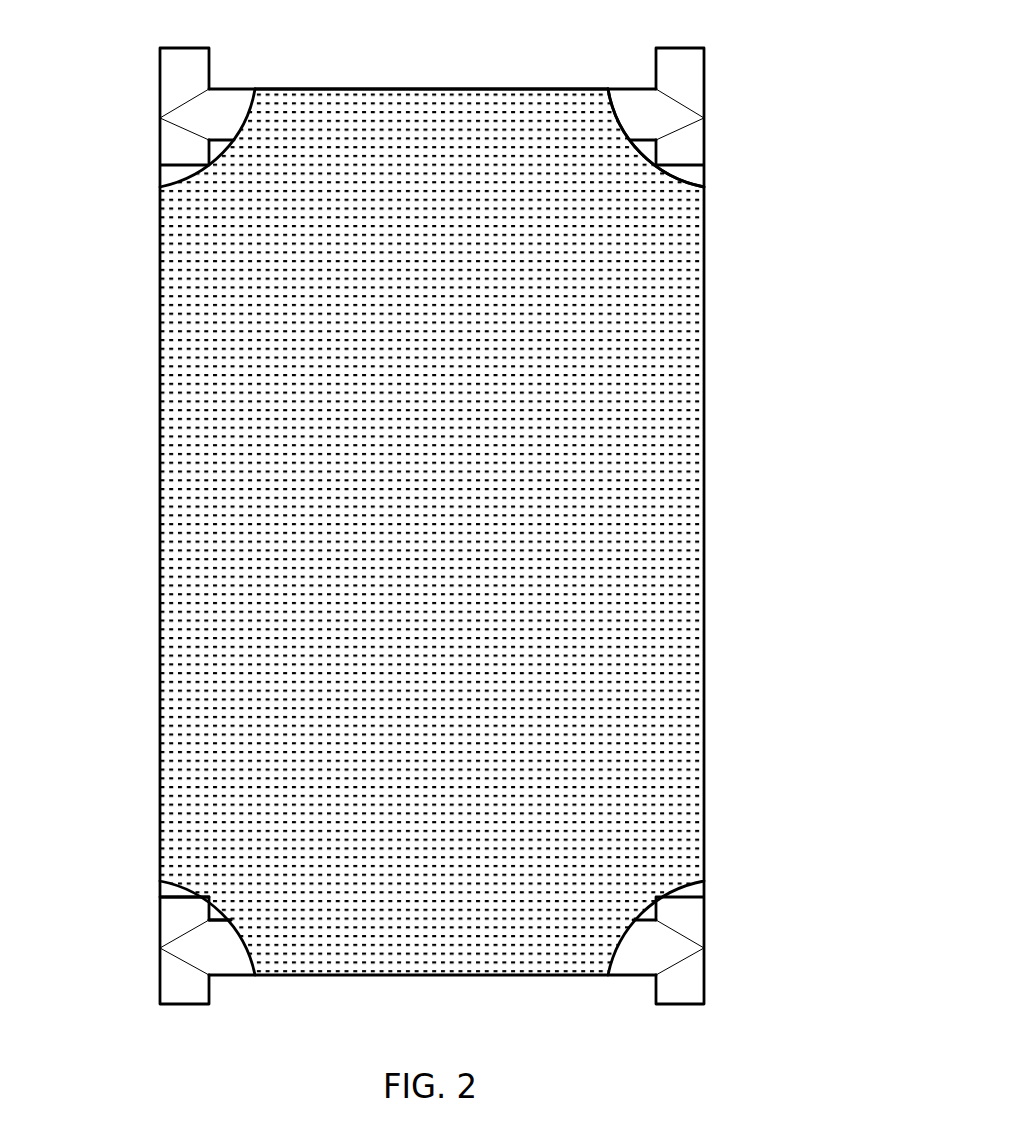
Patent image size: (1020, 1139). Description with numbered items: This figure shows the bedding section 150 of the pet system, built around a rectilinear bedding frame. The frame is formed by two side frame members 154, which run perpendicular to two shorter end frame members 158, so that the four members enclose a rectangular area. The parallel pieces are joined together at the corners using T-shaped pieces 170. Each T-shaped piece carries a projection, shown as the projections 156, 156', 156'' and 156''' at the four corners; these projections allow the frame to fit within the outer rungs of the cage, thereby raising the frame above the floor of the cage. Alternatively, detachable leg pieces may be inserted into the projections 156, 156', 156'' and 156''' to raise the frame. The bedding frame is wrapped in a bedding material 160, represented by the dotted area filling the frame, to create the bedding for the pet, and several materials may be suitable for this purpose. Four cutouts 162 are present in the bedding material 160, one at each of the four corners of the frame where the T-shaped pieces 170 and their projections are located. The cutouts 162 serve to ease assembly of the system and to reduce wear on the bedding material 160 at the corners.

The bedding section 150 is at (741, 694).
The side frame member 154 is at (705, 444).
The projection 156 is at (701, 117).
The projection 156' is at (161, 117).
The projection 156'' is at (161, 943).
The projection 156''' is at (708, 944).
The end frame member 158 is at (427, 88).
The bedding material 160 is at (627, 563).
The cutout 162 is at (629, 133).
The T-shaped piece 170 is at (172, 906).